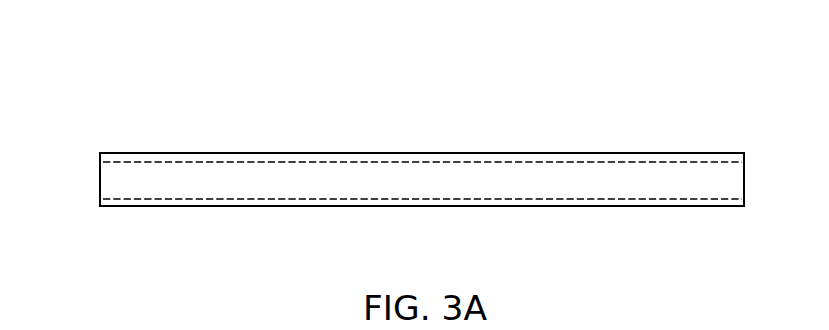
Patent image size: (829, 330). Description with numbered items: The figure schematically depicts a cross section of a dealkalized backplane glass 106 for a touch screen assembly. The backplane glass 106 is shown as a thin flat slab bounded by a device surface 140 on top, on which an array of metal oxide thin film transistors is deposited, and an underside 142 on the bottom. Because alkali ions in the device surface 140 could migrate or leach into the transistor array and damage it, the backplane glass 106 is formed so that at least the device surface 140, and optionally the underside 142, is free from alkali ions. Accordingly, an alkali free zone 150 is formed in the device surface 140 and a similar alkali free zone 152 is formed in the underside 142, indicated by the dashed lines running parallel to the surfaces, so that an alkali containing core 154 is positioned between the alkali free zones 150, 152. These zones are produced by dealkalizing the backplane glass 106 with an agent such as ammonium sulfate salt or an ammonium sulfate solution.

The backplane glass 106 is at (657, 118).
The device surface 140 is at (496, 153).
The underside 142 is at (495, 206).
The alkali free zone 150 is at (312, 161).
The alkali free zone 152 is at (312, 200).
The alkali containing core 154 is at (100, 179).